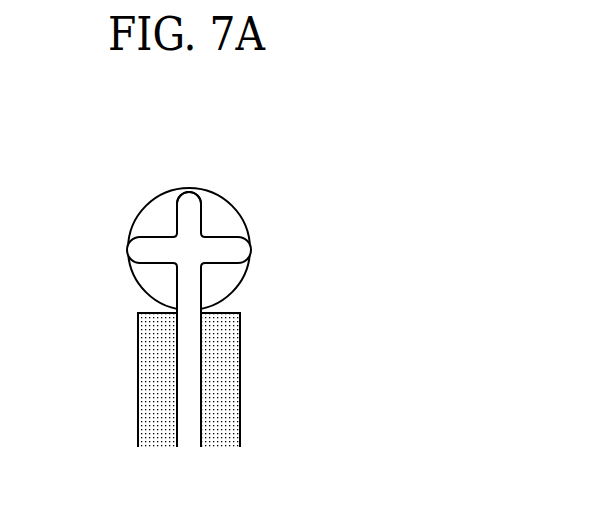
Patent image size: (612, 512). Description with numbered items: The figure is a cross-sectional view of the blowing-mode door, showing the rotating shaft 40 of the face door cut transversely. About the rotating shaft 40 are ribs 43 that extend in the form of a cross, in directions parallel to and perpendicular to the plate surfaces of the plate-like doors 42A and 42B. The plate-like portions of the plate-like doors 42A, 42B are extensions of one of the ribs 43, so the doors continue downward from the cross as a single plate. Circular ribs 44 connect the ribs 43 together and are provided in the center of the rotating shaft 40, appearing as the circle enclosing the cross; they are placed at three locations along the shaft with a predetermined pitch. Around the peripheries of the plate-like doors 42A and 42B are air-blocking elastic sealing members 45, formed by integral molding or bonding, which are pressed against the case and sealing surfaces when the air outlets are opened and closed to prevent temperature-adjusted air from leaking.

The rotating shaft 40 is at (195, 246).
The ribs 43 is at (189, 198).
The circular ribs 44 is at (153, 220).
The plate-like door 42A is at (188, 345).
The plate-like door 42B is at (189, 380).
The elastic sealing member 45 is at (160, 410).